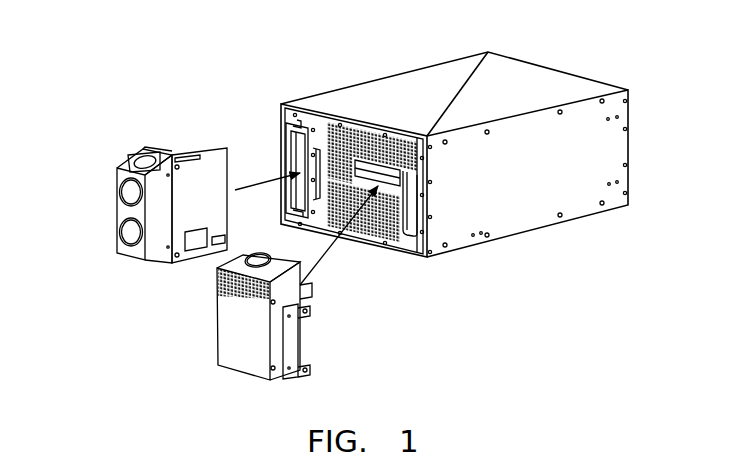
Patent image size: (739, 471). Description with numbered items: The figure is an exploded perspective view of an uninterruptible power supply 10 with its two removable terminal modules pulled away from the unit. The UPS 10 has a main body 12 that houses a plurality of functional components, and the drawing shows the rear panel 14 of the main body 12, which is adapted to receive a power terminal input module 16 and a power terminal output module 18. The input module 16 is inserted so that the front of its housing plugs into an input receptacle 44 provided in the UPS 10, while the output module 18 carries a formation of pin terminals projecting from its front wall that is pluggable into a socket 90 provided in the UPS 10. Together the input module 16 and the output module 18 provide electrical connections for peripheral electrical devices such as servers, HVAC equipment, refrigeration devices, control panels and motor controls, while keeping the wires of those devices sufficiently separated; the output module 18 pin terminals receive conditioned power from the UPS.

The uninterruptible power supply 10 is at (549, 239).
The main body 12 is at (368, 92).
The rear panel 14 is at (387, 247).
The power terminal input module 16 is at (110, 244).
The power terminal output module 18 is at (214, 366).
The input receptacle 44 is at (302, 147).
The socket 90 is at (390, 180).